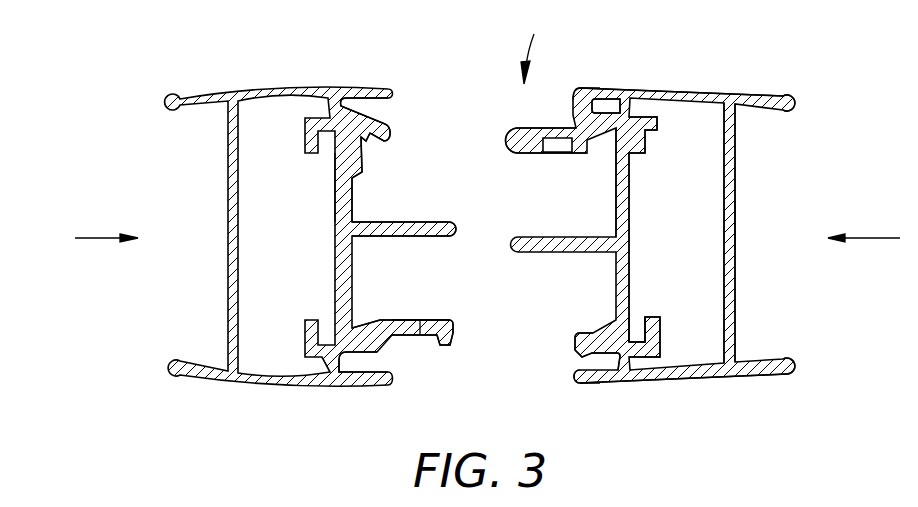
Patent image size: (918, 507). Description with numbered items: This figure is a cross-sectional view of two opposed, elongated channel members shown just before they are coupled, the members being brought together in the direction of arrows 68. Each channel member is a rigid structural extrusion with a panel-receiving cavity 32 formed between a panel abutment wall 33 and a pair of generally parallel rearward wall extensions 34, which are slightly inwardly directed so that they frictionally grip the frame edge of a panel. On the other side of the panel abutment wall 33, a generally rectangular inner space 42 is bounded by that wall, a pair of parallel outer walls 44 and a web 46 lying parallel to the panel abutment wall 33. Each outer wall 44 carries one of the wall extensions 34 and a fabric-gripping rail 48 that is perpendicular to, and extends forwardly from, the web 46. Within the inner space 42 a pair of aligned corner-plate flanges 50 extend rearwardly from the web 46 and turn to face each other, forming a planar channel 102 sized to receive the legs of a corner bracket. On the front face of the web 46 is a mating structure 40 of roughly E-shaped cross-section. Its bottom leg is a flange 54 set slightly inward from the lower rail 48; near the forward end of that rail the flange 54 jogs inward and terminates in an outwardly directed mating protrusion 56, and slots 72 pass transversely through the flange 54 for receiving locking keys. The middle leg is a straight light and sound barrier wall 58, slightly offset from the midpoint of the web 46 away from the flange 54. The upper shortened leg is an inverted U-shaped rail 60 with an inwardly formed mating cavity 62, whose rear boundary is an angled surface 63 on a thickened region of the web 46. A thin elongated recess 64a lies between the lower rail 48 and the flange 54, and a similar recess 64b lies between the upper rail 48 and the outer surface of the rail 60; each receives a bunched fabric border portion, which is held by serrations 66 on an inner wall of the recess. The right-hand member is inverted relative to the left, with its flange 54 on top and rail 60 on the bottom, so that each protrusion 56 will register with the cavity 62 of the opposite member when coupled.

The panel-receiving cavity 32 is at (767, 280).
The panel abutment wall 33 is at (735, 225).
The rearward wall extensions 34 is at (757, 108).
The mating structure 40 is at (537, 46).
The inner space 42 is at (703, 202).
The outer walls 44 is at (688, 90).
The web 46 is at (614, 194).
The fabric-gripping rail 48 is at (588, 88).
The corner-plate flanges 50 is at (658, 135).
The flange 54 is at (430, 320).
The mating protrusion 56 is at (453, 336).
The light and sound barrier wall 58 is at (420, 222).
The U-shaped rail 60 is at (388, 133).
The mating cavity 62 is at (366, 140).
The angled surface 63 is at (350, 177).
The elongated recess 64a is at (362, 365).
The elongated recess 64b is at (363, 110).
The serrations 66 is at (590, 100).
The arrows 68 is at (101, 238).
The slots 72 is at (408, 321).
The planar channel 102 is at (633, 330).